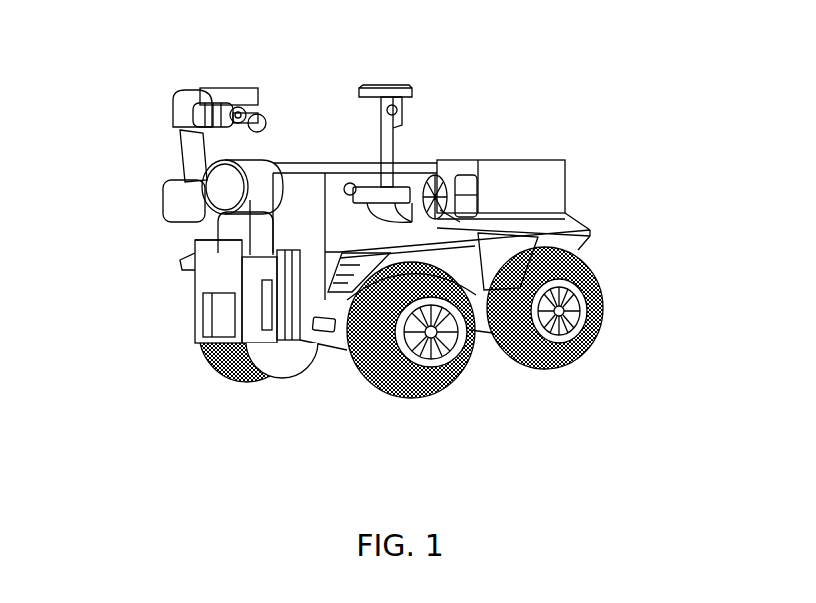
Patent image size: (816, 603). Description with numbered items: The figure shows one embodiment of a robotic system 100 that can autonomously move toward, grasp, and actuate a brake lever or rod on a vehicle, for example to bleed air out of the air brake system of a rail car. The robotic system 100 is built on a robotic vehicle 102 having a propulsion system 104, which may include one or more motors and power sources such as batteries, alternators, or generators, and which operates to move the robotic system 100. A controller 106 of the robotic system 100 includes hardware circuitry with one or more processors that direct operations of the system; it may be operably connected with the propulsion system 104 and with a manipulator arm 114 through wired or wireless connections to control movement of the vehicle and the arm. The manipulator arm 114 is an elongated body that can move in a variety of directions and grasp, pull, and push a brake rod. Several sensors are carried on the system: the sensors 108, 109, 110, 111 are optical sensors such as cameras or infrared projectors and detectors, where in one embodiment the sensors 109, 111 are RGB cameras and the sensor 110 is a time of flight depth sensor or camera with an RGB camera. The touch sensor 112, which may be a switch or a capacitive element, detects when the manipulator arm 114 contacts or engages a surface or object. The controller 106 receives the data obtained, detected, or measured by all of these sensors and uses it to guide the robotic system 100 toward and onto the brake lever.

The robotic system 100 is at (740, 80).
The robotic vehicle 102 is at (669, 167).
The propulsion system 104 is at (190, 412).
The controller 106 is at (510, 156).
The sensor 108 is at (397, 220).
The sensor 109 is at (355, 185).
The sensor 110 is at (385, 85).
The sensor 111 is at (400, 108).
The touch sensor 112 is at (272, 105).
The manipulator arm 114 is at (106, 82).